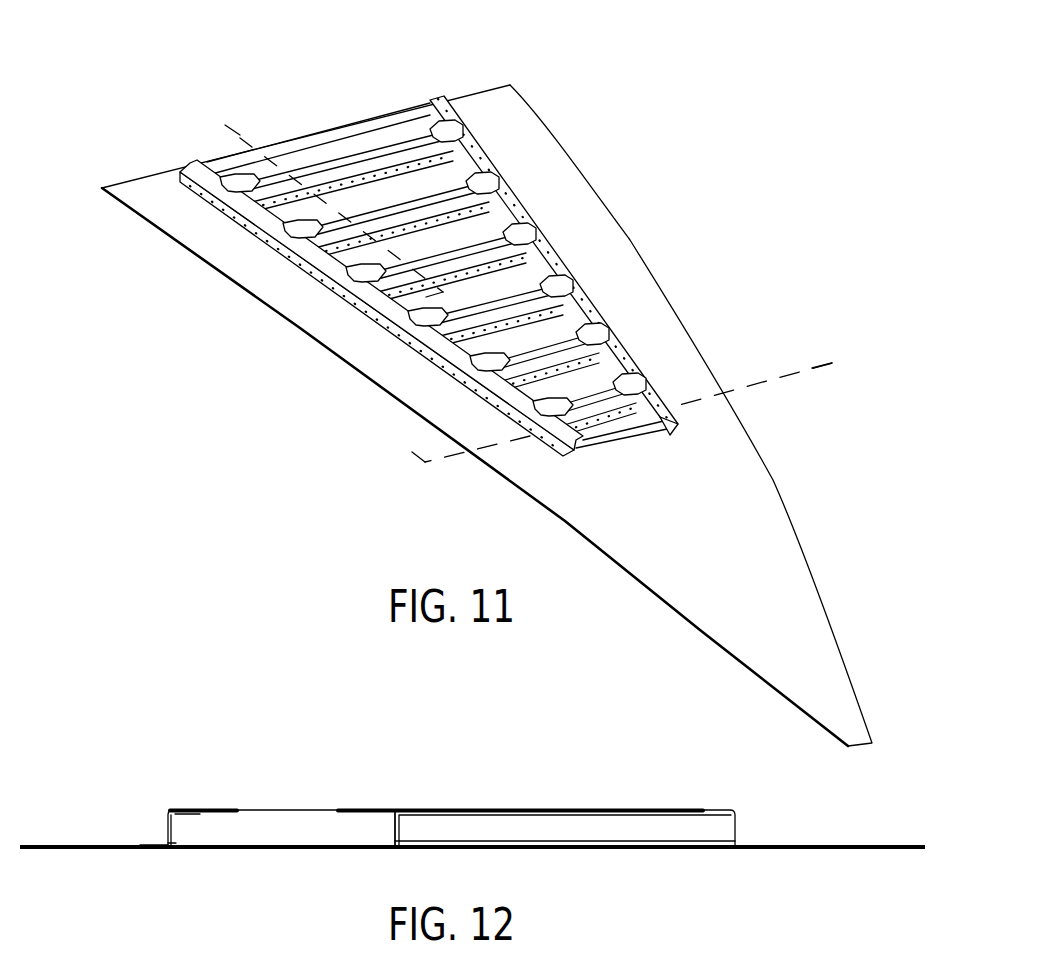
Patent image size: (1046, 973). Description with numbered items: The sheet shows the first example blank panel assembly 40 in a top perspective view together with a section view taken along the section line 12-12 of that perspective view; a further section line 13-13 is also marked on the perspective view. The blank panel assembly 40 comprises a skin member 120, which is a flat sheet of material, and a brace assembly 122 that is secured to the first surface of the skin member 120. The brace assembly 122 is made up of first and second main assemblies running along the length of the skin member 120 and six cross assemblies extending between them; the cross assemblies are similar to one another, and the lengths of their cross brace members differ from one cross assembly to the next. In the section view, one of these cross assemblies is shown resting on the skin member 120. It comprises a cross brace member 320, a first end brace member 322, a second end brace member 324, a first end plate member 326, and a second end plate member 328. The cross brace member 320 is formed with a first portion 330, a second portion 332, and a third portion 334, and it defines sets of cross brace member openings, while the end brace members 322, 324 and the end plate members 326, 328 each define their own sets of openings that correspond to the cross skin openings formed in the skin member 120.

In FIG. 11, the first blank panel assembly 40 is at (496, 413).
In FIG. 11, the skin member 120 is at (805, 618).
In FIG. 12, the skin member 120 is at (812, 845).
In FIG. 11, the brace assembly 122 is at (493, 123).
In FIG. 12, the brace assembly 122 is at (565, 808).
In FIG. 11, the section line 12- 12 is at (832, 363).
In FIG. 11, the section line 13- 13 is at (225, 125).
In FIG. 12, the cross brace member 320 is at (401, 808).
In FIG. 12, the first end brace member 322 is at (176, 838).
In FIG. 12, the second end brace member 324 is at (399, 838).
In FIG. 12, the first end plate member 326 is at (226, 810).
In FIG. 12, the second end plate member 328 is at (346, 809).
In FIG. 12, the first portion 330 is at (146, 846).
In FIG. 12, the second portion 332 is at (168, 812).
In FIG. 12, the third portion 334 is at (192, 818).